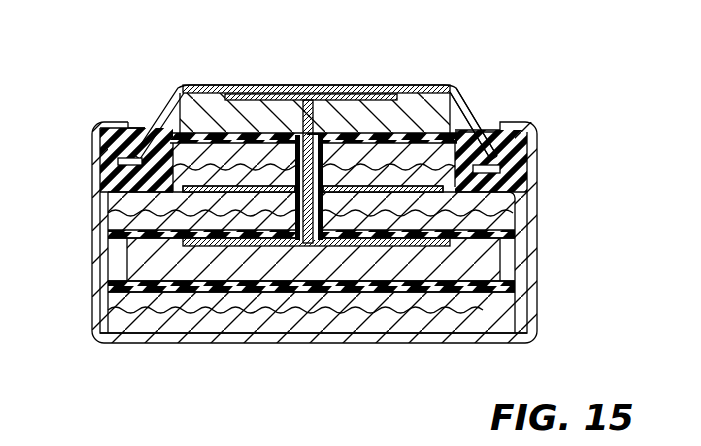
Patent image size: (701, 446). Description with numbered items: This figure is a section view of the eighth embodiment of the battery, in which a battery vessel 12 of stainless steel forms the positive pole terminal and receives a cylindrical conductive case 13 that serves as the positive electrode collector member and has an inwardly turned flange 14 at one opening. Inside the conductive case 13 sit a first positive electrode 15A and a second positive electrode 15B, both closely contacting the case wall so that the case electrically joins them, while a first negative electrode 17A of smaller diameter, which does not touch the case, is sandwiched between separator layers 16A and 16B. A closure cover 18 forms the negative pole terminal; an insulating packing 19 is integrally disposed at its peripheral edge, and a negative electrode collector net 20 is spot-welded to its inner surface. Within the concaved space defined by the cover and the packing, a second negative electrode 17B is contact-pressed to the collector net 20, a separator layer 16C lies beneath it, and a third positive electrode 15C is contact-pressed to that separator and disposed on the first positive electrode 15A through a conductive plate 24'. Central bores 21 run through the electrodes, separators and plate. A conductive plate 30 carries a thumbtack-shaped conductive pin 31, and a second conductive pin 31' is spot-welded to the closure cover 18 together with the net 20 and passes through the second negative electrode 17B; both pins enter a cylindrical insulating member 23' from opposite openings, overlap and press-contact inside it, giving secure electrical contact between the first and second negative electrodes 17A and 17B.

The battery vessel 12 is at (191, 338).
The conductive case 13 is at (108, 207).
The inwardly turned flange 14 is at (500, 188).
The first positive electrode 15A is at (510, 227).
The second positive electrode 15B is at (507, 328).
The third positive electrode 15C is at (163, 132).
The separator layer 16A is at (118, 236).
The separator layer 16B is at (115, 282).
The separator layer 16C is at (181, 128).
The first negative electrode 17A is at (493, 271).
The second negative electrode 17B is at (208, 107).
The closure cover 18 is at (433, 87).
The insulating packing 19 is at (110, 130).
The negative electrode collector net 20 is at (392, 90).
The central bores 21 is at (266, 118).
The cylindrical insulating member 23' is at (379, 119).
The conductive plate 24' is at (476, 118).
The conductive plate 30 is at (262, 247).
The conductive pin 31 is at (319, 255).
The second conductive pin 31' is at (302, 134).